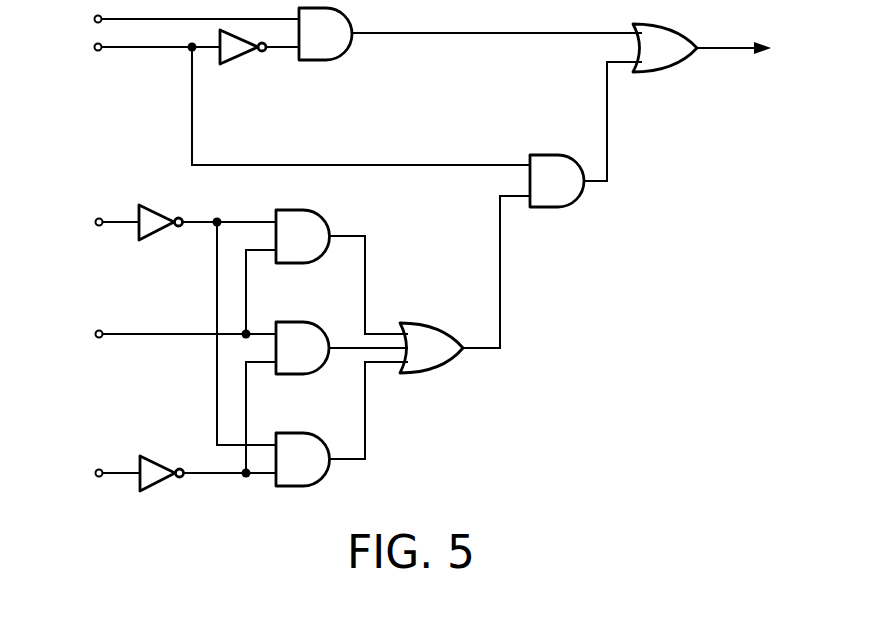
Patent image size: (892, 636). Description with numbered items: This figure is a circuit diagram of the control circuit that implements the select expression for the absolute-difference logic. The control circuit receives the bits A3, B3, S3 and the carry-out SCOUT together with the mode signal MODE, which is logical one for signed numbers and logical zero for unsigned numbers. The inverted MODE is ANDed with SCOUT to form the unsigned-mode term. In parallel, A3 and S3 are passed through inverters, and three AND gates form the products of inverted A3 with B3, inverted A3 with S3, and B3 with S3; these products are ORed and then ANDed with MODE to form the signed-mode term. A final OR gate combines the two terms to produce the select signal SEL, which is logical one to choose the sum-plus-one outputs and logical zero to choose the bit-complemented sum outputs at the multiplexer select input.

The carry-out bit SCOUT is at (159, 16).
The mode signal MODE is at (159, 47).
The select signal SEL is at (760, 50).
The most significant bit of operand A A3 is at (170, 222).
The most significant bit of operand B B3 is at (170, 336).
The most significant sum bit S3 is at (170, 473).